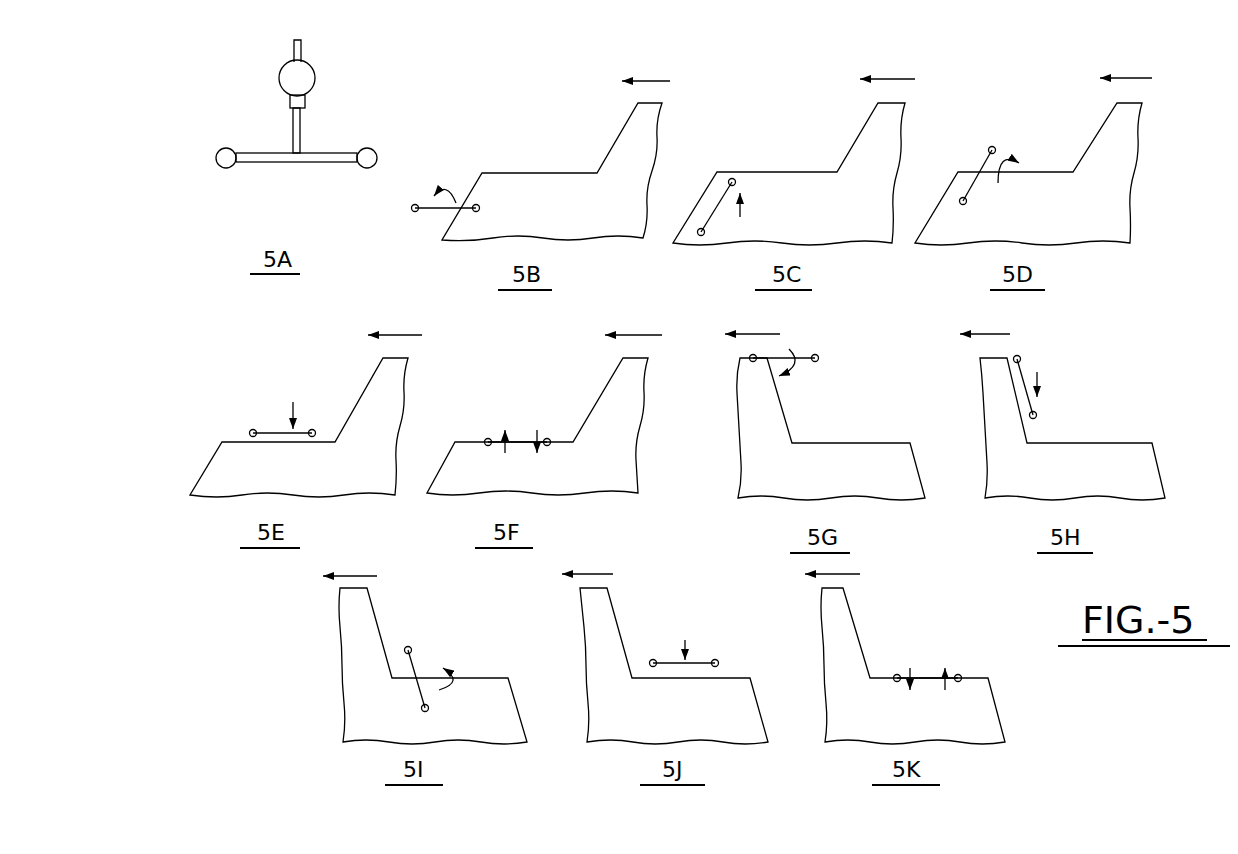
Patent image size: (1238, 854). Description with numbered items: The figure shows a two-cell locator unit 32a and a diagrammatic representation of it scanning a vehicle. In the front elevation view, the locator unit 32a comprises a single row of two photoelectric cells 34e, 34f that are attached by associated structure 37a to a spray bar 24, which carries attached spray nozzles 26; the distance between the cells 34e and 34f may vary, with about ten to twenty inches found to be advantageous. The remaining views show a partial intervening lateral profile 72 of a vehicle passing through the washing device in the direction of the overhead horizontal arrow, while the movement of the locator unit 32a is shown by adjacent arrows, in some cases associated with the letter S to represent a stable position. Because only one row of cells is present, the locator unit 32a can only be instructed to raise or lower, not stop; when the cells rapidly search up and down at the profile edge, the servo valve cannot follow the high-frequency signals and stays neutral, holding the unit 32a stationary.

In FIG. 5A, the spray bar 24 is at (316, 70).
In FIG. 5A, the spray nozzles 26 is at (306, 101).
In FIG. 5A, the two-cell locator unit 32a is at (262, 140).
In FIG. 5B, the two-cell locator unit 32a is at (485, 169).
In FIG. 5C, the two-cell locator unit 32a is at (747, 169).
In FIG. 5D, the two-cell locator unit 32a is at (989, 139).
In FIG. 5E, the two-cell locator unit 32a is at (279, 426).
In FIG. 5F, the two-cell locator unit 32a is at (530, 428).
In FIG. 5G, the two-cell locator unit 32a is at (792, 346).
In FIG. 5H, the two-cell locator unit 32a is at (1023, 349).
In FIG. 5I, the two-cell locator unit 32a is at (430, 670).
In FIG. 5J, the two-cell locator unit 32a is at (705, 656).
In FIG. 5K, the two-cell locator unit 32a is at (952, 664).
In FIG. 5A, the photoelectric cell 34e is at (223, 168).
In FIG. 5A, the photoelectric cell 34f is at (370, 168).
In FIG. 5A, the associated structure 37a is at (291, 163).
In FIG. 5B, the intervening lateral profile 72 is at (626, 122).
In FIG. 5C, the intervening lateral profile 72 is at (866, 122).
In FIG. 5D, the intervening lateral profile 72 is at (1105, 122).
In FIG. 5E, the intervening lateral profile 72 is at (376, 373).
In FIG. 5F, the intervening lateral profile 72 is at (616, 373).
In FIG. 5G, the intervening lateral profile 72 is at (843, 443).
In FIG. 5H, the intervening lateral profile 72 is at (1095, 443).
In FIG. 5I, the intervening lateral profile 72 is at (370, 598).
In FIG. 5J, the intervening lateral profile 72 is at (610, 598).
In FIG. 5K, the intervening lateral profile 72 is at (850, 598).